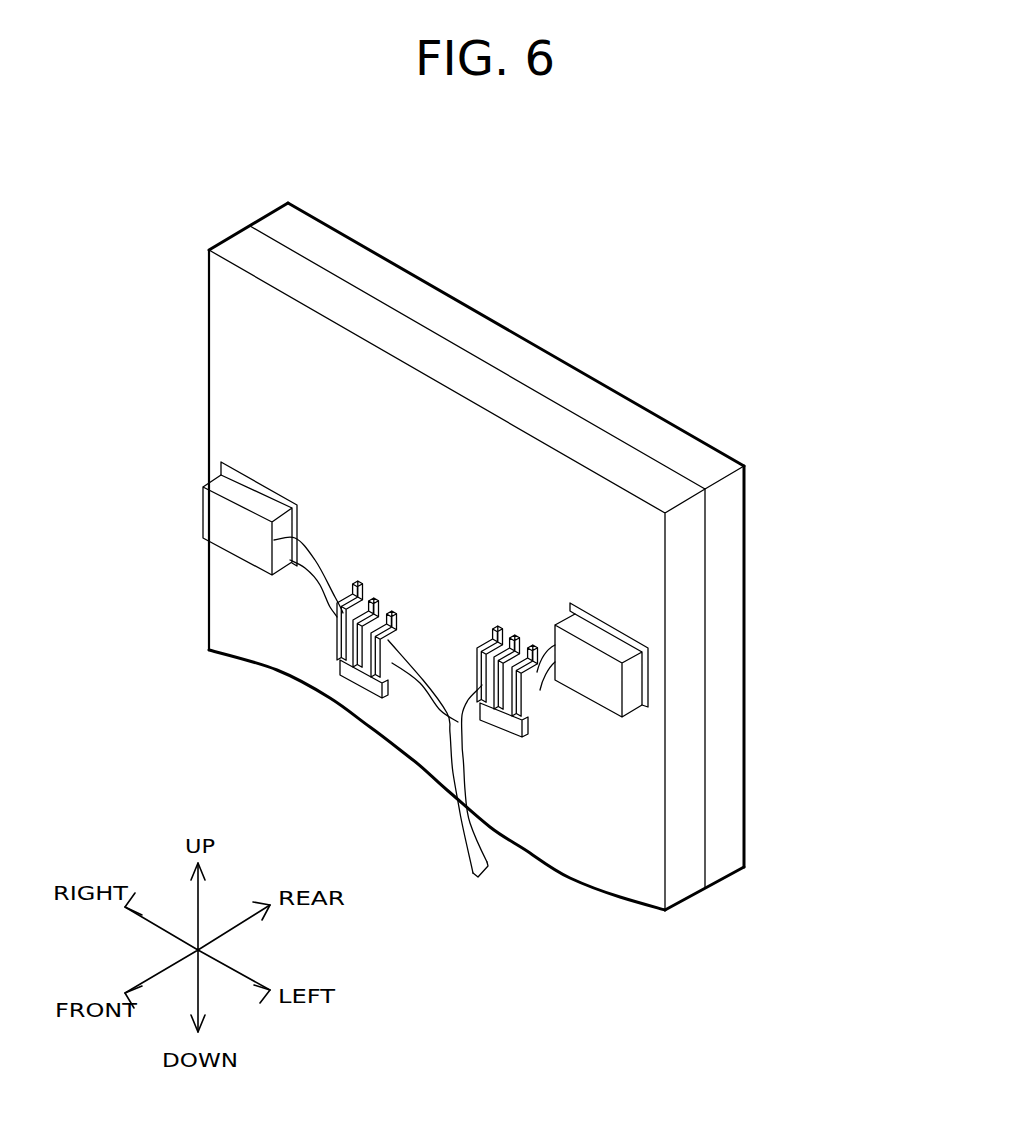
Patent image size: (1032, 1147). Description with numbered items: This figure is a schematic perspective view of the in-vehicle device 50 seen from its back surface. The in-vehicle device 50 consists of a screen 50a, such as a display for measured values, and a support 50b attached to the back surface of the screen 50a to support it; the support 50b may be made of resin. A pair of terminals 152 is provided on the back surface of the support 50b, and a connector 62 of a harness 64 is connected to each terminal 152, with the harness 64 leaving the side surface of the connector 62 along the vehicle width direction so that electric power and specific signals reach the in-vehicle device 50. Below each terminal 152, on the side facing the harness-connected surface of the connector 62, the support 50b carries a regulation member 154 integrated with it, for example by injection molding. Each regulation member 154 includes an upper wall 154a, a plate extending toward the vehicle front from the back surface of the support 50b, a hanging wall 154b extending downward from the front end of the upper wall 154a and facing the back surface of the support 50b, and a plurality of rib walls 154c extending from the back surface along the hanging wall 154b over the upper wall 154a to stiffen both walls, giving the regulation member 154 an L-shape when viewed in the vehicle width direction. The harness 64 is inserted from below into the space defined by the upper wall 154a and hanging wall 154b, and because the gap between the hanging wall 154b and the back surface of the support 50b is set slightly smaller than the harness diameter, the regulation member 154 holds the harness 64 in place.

The in-vehicle device 50 is at (476, 533).
The screen 50a is at (509, 357).
The support 50b is at (437, 358).
The connector 62 is at (267, 505).
The harness 64 is at (314, 572).
The terminal 152 is at (245, 489).
The regulation member 154 is at (476, 739).
The upper wall 154a is at (338, 607).
The hanging wall 154b is at (338, 633).
The rib wall 154c is at (338, 652).